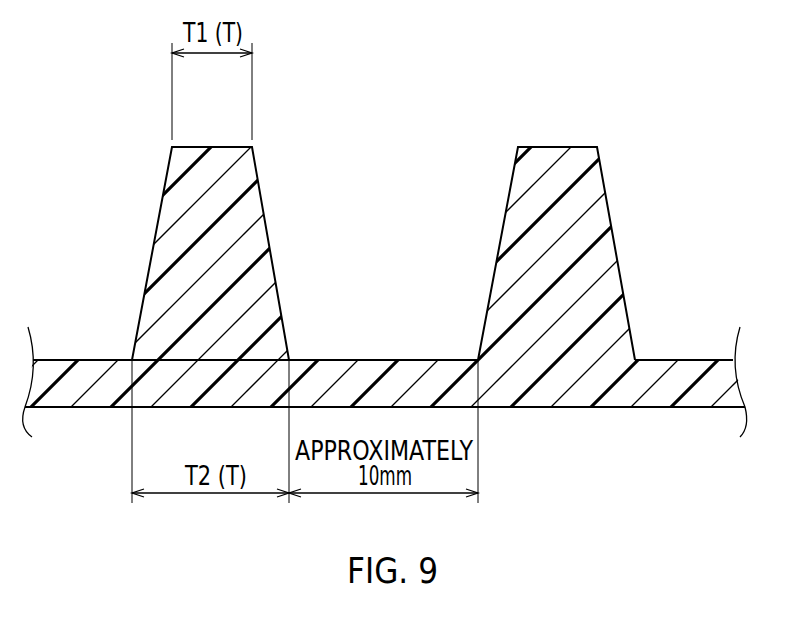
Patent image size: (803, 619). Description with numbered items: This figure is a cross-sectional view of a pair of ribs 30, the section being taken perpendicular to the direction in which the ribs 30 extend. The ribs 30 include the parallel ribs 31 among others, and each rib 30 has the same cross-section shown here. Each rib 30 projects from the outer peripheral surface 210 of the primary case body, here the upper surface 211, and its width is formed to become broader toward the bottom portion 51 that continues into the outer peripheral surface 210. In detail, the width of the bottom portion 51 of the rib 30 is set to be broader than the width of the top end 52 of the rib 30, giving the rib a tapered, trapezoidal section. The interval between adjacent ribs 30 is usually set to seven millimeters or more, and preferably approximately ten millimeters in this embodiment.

The rib 30 is at (401, 251).
The parallel rib 31 is at (401, 251).
The bottom portion 51 is at (272, 342).
The top end 52 is at (247, 172).
The outer peripheral surface 210 is at (82, 296).
The upper surface 211 is at (78, 360).